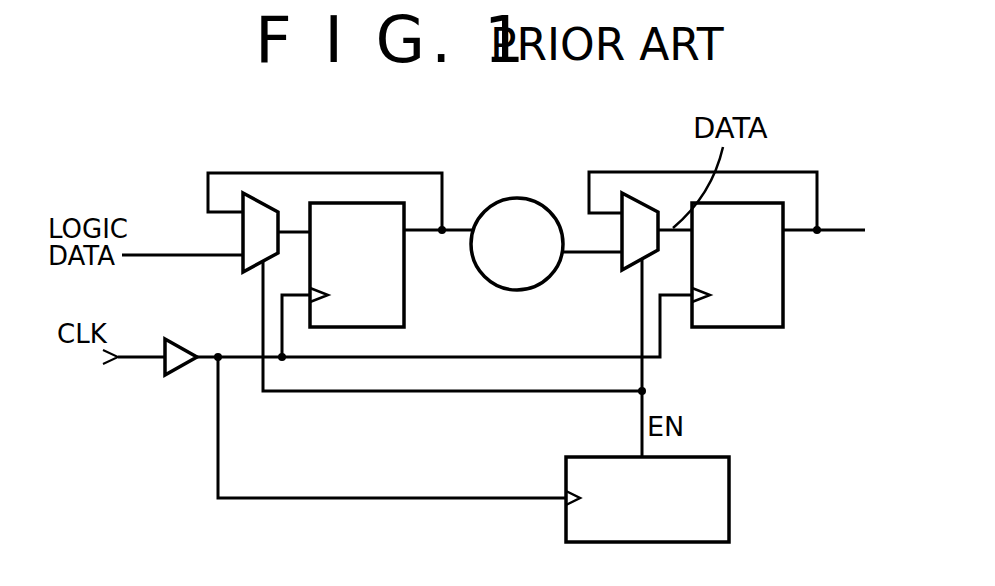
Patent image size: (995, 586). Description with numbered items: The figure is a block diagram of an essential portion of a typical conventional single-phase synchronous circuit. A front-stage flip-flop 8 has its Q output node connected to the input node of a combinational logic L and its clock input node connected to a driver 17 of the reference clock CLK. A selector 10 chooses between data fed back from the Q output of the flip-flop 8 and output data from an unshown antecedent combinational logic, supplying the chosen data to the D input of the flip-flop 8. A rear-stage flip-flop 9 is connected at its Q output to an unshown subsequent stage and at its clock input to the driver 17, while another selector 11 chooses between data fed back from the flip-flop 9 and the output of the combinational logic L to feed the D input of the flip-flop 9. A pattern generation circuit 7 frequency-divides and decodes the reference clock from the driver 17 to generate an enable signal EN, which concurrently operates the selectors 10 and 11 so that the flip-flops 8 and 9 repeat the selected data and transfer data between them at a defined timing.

The pattern generation circuit 7 is at (729, 500).
The front-stage flip-flop 8 is at (404, 320).
The rear-stage flip-flop 9 is at (783, 285).
The selector 10 is at (243, 262).
The selector 11 is at (632, 268).
The driver 17 is at (179, 377).
The combinational logic L is at (544, 205).